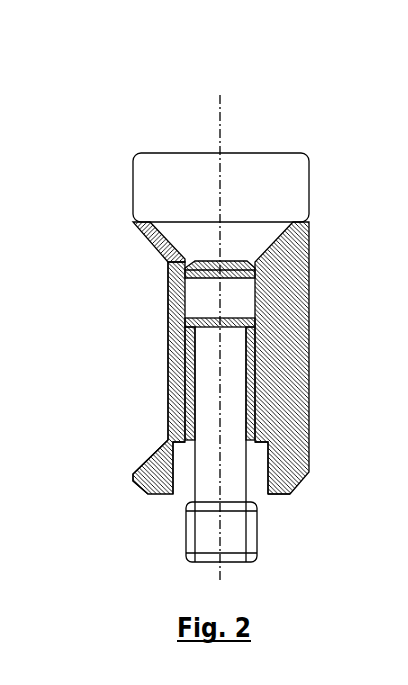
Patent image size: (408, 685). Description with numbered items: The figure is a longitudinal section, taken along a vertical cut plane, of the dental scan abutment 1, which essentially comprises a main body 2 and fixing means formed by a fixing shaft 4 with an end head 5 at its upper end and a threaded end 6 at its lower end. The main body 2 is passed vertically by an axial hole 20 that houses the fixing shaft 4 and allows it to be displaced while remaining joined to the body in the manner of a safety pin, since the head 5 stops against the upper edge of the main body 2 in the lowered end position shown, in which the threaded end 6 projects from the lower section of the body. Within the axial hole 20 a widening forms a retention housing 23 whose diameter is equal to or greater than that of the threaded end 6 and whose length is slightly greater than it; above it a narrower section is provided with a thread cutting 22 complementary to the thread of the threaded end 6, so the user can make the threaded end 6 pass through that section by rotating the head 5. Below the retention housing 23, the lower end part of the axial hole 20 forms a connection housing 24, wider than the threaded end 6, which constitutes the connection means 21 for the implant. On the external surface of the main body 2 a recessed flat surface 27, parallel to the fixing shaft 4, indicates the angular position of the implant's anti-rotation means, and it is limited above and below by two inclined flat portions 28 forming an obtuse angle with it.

The dental scan abutment 1 is at (126, 99).
The main body 2 is at (231, 385).
The fixing shaft 4 is at (208, 367).
The end head 5 is at (160, 190).
The threaded end 6 is at (188, 533).
The axial hole 20 is at (253, 303).
The connection means 21 is at (270, 513).
The thread cutting 22 is at (247, 365).
The retention housing 23 is at (248, 410).
The connection housing 24 is at (257, 470).
The flat surface 27 is at (162, 333).
The flat portions 28 is at (143, 251).